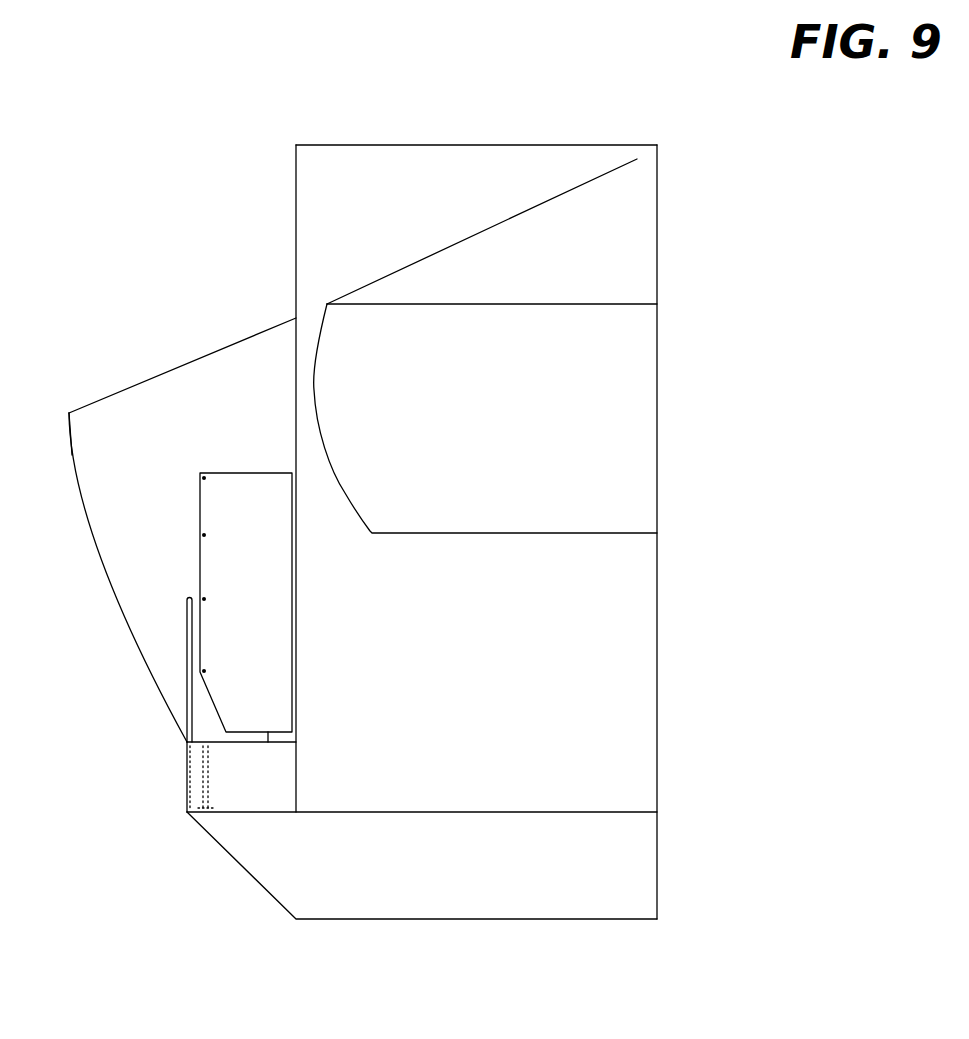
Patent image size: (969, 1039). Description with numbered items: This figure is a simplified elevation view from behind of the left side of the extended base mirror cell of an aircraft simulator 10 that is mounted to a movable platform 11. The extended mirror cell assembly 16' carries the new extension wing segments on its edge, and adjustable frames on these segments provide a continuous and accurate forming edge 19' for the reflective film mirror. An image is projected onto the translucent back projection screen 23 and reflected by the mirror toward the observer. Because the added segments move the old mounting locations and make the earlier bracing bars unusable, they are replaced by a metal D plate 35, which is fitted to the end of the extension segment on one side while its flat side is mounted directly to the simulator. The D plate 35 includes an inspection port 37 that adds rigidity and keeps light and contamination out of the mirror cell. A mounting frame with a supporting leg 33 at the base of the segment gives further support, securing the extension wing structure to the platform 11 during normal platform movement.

The aircraft simulator 10 is at (135, 165).
The movable platform 11 is at (620, 810).
The extended mirror cell assembly 16' is at (165, 607).
The forming edge 19' is at (59, 392).
The back projection screen 23 is at (316, 395).
The supporting leg 33 is at (188, 763).
The D plate 35 is at (80, 513).
The inspection port 37 is at (268, 732).